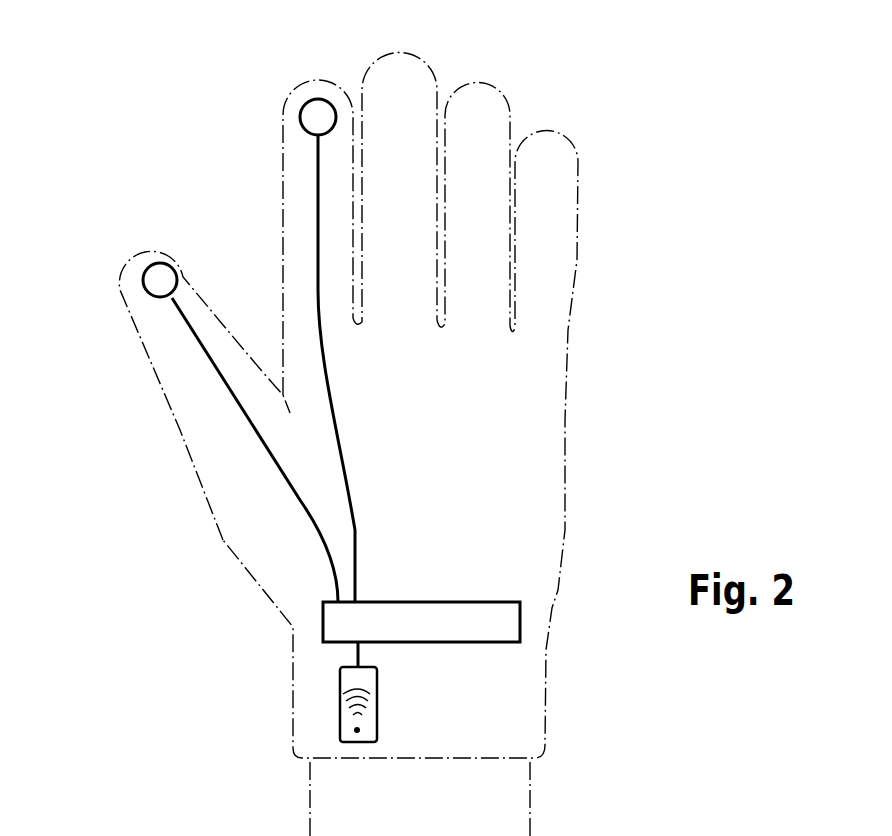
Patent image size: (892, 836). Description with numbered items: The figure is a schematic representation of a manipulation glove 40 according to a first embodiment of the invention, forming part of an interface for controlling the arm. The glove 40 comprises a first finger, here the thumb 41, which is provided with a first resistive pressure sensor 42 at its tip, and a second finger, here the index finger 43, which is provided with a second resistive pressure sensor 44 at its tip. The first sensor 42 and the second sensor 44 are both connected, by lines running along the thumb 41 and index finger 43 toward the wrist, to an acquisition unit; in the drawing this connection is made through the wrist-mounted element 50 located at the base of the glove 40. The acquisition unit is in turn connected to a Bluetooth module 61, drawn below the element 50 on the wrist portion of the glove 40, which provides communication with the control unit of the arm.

The manipulation glove 40 is at (548, 428).
The thumb 41 is at (140, 268).
The first resistive pressure sensor 42 is at (162, 278).
The index finger 43 is at (318, 82).
The second resistive pressure sensor 44 is at (307, 116).
The wrist strap control unit 50 is at (518, 622).
The Bluetooth module 61 is at (340, 700).